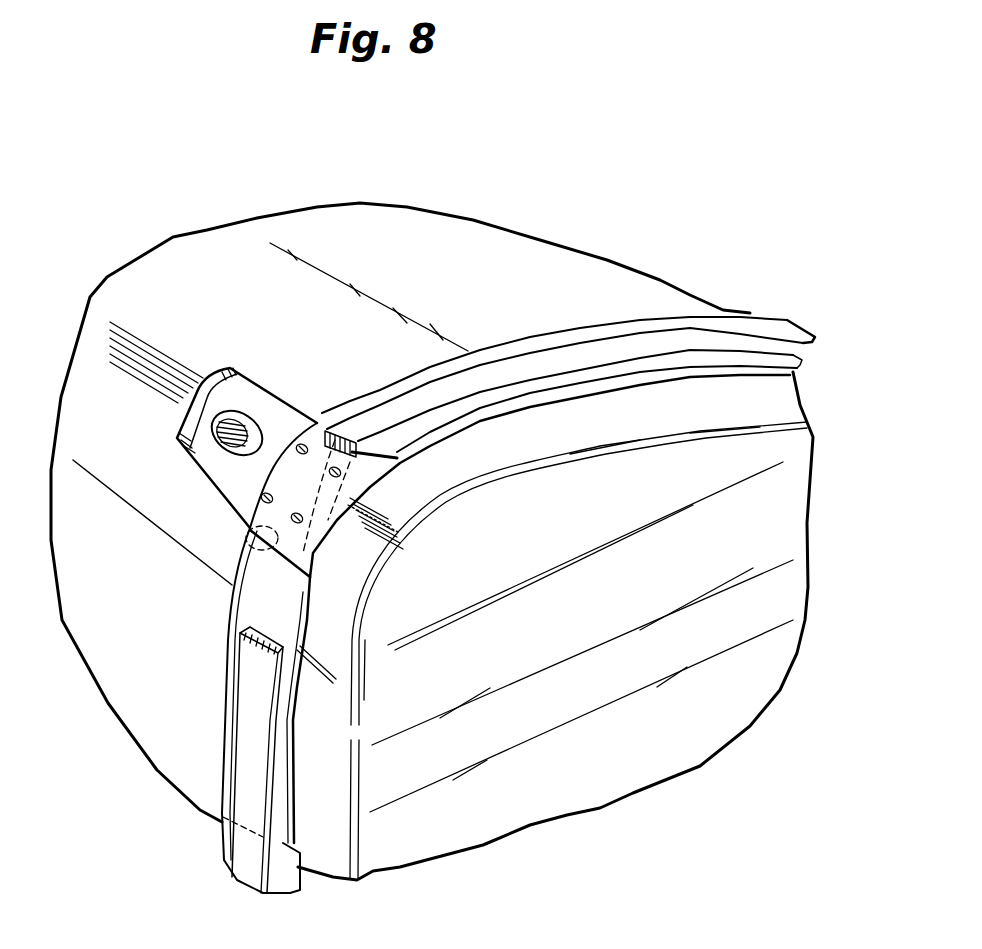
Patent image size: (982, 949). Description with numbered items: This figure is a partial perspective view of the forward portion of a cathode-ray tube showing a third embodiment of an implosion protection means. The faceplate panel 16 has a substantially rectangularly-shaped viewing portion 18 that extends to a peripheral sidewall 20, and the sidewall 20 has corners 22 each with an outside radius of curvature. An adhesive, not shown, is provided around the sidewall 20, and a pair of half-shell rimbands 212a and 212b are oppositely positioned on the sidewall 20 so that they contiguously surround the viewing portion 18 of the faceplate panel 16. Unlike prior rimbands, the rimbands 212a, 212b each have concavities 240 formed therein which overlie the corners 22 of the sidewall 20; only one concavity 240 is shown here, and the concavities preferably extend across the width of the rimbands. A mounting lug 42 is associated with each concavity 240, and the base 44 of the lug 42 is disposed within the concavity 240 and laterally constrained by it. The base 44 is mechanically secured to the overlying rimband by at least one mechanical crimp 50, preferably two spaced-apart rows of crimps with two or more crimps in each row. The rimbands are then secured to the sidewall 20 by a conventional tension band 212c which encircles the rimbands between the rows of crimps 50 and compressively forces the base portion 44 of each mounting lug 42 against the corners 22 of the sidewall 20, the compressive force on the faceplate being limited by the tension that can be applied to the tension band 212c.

The faceplate panel 16 is at (863, 537).
The viewing portion 18 is at (753, 597).
The peripheral sidewall 20 is at (757, 401).
The corners 22 is at (372, 488).
The mounting lug 42 is at (253, 372).
The base portion 44 is at (250, 534).
The mechanical crimp 50 is at (296, 451).
The concavities 240 is at (372, 488).
The half-shell rimband 212a is at (268, 596).
The half-shell rimband 212b is at (222, 850).
The tension band 212c is at (785, 327).